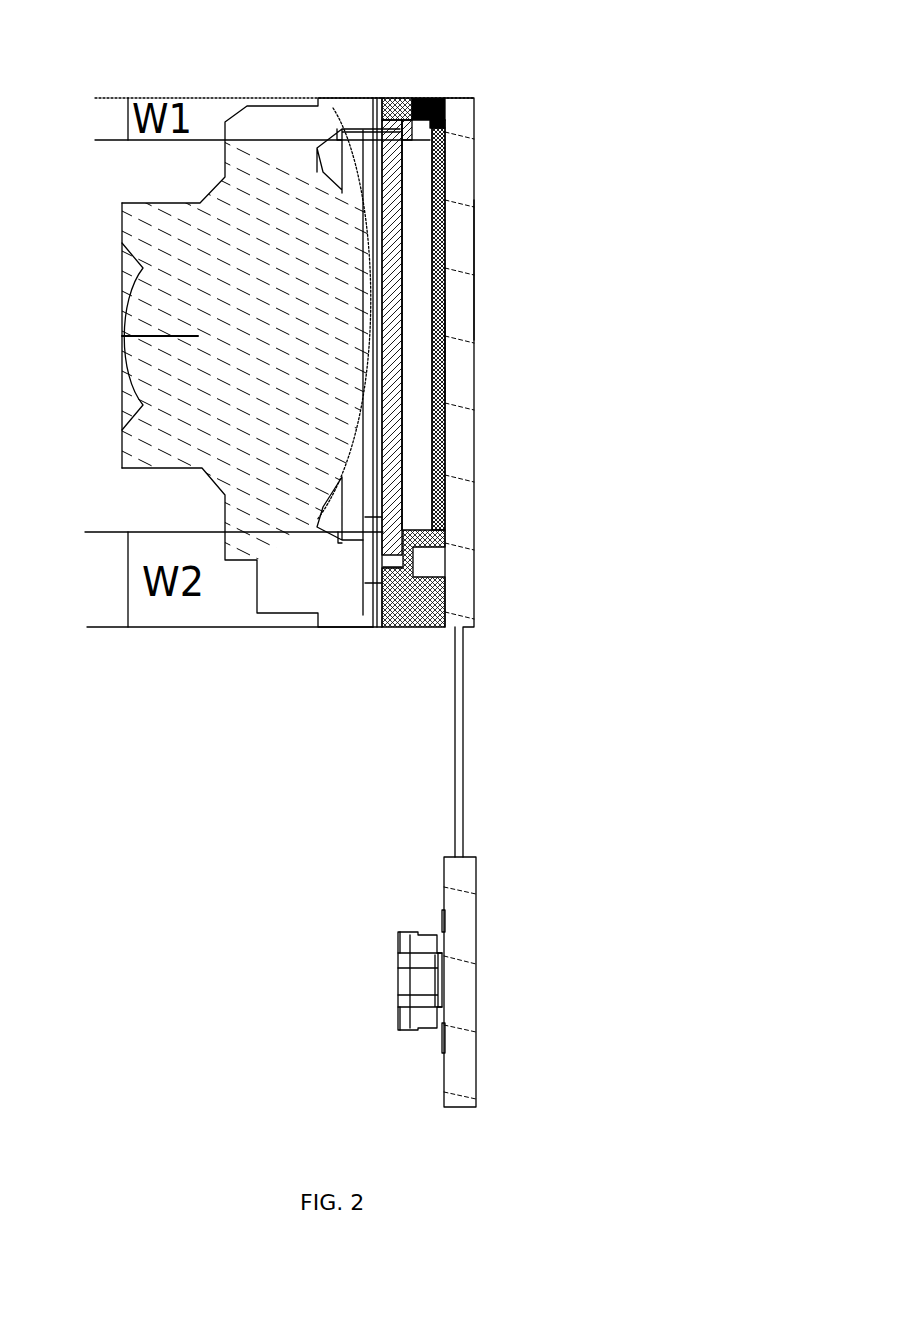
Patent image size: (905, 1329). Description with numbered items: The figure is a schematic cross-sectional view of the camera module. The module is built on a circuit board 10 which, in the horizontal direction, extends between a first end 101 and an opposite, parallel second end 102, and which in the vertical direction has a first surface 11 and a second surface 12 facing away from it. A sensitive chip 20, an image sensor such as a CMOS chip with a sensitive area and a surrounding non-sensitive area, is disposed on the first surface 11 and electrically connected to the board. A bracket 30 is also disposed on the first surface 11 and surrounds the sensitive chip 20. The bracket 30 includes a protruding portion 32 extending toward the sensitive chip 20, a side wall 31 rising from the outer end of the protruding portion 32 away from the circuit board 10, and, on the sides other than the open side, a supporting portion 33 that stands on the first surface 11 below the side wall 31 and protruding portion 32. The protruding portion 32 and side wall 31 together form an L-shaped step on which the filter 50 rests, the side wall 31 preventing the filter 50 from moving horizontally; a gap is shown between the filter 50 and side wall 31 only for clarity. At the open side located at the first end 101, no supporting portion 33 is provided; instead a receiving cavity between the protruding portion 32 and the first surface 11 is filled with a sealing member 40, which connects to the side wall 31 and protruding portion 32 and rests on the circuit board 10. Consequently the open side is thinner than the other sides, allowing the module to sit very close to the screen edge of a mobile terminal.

The circuit board 10 is at (458, 250).
The first surface 11 is at (447, 307).
The second surface 12 is at (445, 268).
The sensitive chip 20 is at (448, 388).
The bracket 30 is at (263, 677).
The side wall 31 is at (395, 98).
The protruding portion 32 is at (328, 93).
The supporting portion 33 is at (412, 628).
The sealing member 40 is at (433, 98).
The filter 50 is at (402, 465).
The first end 101 is at (390, 97).
The second end 102 is at (477, 1097).